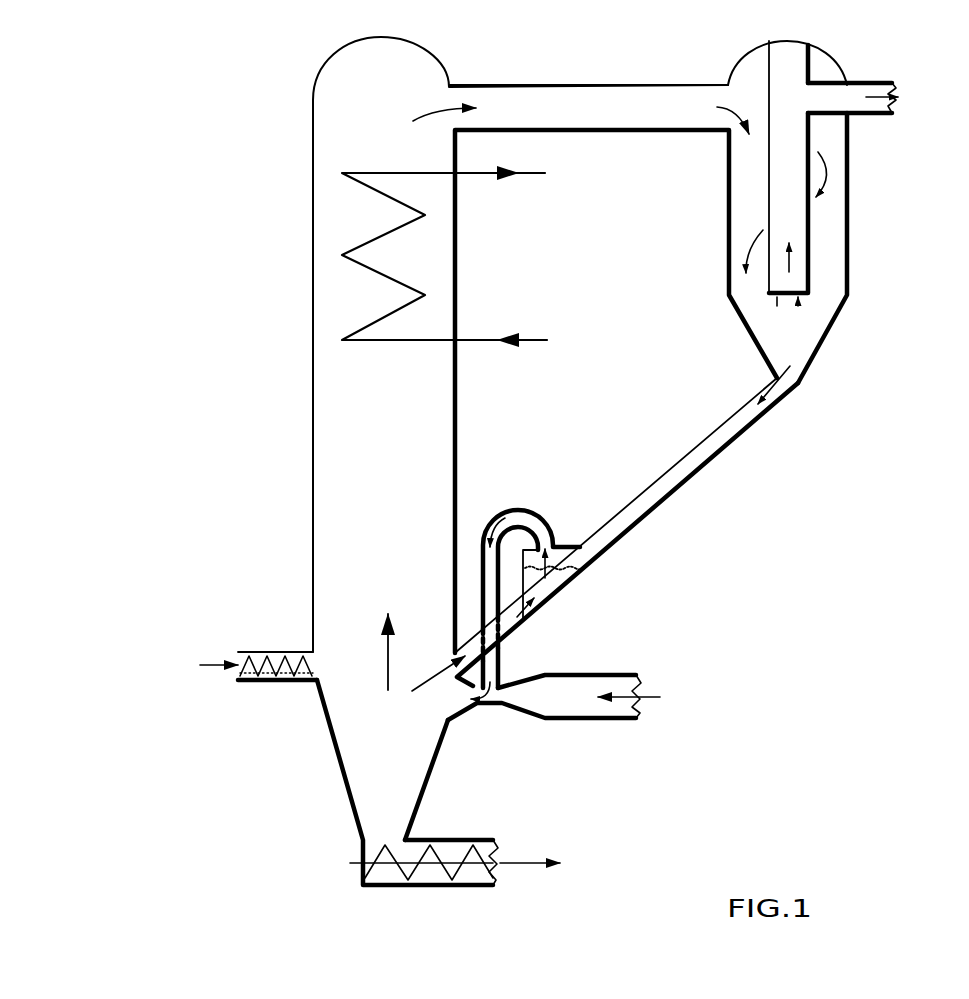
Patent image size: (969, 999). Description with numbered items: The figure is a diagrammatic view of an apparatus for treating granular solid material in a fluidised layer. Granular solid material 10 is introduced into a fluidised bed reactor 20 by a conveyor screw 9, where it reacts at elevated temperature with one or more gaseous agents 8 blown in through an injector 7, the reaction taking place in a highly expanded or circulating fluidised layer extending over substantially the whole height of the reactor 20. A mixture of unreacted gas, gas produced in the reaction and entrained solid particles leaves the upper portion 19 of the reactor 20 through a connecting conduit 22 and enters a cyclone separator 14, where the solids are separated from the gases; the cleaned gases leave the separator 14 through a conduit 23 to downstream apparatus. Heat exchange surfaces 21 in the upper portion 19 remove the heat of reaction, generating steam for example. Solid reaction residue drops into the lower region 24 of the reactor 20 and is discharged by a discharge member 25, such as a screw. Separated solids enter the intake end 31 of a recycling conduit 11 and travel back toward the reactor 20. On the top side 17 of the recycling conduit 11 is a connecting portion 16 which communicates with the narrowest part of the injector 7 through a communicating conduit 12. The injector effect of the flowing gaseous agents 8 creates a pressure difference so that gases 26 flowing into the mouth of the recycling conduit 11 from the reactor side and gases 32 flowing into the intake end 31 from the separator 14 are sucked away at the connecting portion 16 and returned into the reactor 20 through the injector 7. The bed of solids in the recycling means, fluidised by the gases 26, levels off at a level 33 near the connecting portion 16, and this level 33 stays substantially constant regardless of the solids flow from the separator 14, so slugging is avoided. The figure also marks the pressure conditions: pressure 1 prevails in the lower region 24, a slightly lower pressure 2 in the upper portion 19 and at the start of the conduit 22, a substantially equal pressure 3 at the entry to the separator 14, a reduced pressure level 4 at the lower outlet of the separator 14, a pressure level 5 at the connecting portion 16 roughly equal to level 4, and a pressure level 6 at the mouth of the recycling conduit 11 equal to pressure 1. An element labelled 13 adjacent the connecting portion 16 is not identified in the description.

The pressure 1 is at (387, 677).
The pressure 2 is at (433, 107).
The pressure 3 is at (739, 100).
The pressure level 4 is at (790, 325).
The pressure level 5 is at (560, 568).
The pressure level 6 is at (436, 681).
The injector 7 is at (590, 720).
The gaseous agents 8 is at (662, 697).
The conveyor screw 9 is at (278, 655).
The granular solid material 10 is at (213, 668).
The recycling conduit 11 is at (662, 501).
The communicating conduit 12 is at (525, 508).
The seal chamber 13 is at (552, 581).
The cyclone separator 14 is at (847, 247).
The connecting portion 16 is at (568, 546).
The top side 17 is at (664, 475).
The upper portion 19 is at (338, 128).
The fluidised bed reactor 20 is at (421, 441).
The heat exchange surfaces 21 is at (363, 267).
The connecting conduit 22 is at (573, 85).
The conduit 23 is at (877, 93).
The lower region 24 is at (360, 780).
The discharge member 25 is at (418, 870).
The gases 26 is at (496, 515).
The intake end 31 is at (773, 377).
The gases 32 is at (775, 379).
The level 33 is at (596, 571).